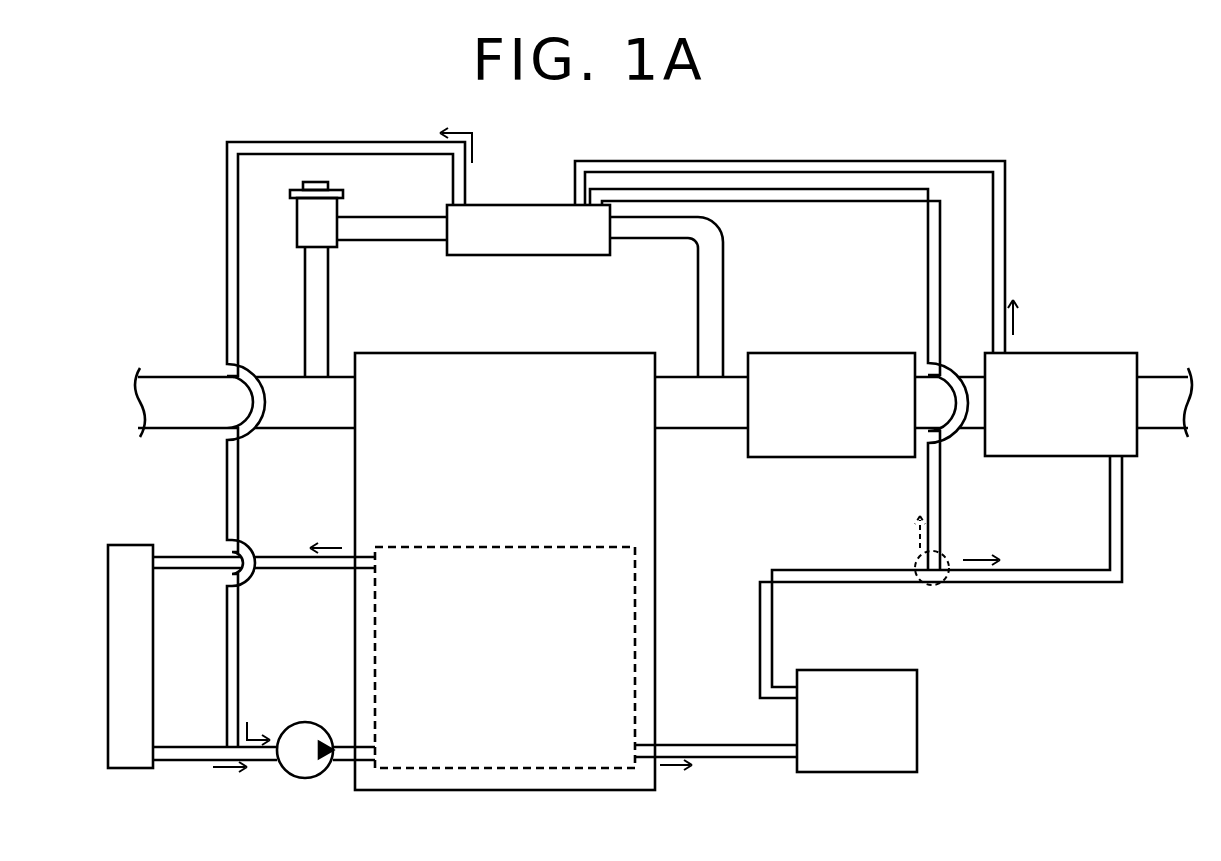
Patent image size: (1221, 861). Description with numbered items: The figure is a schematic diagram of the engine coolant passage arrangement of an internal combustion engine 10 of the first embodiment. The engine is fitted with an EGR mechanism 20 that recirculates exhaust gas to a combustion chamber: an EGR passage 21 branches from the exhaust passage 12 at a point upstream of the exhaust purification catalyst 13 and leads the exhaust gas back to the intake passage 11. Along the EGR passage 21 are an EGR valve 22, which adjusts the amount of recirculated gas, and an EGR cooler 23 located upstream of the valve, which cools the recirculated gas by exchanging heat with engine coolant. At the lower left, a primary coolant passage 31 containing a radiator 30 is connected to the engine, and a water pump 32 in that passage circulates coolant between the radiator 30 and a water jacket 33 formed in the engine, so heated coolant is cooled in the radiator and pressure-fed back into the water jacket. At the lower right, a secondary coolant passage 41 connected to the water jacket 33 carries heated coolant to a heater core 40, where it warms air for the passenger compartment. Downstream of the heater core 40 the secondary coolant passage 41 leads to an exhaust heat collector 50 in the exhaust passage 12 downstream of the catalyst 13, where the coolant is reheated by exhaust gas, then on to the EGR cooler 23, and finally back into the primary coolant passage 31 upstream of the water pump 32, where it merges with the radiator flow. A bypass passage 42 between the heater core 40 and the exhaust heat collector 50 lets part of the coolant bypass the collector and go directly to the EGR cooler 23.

The internal combustion engine 10 is at (606, 352).
The intake passage 11 is at (311, 428).
The exhaust passage 12 is at (710, 428).
The exhaust purification catalyst 13 is at (840, 352).
The EGR mechanism 20 is at (506, 263).
The EGR passage 21 is at (397, 240).
The EGR valve 22 is at (338, 256).
The EGR cooler 23 is at (522, 204).
The radiator 30 is at (108, 757).
The primary coolant passage 31 is at (264, 553).
The water pump 32 is at (300, 778).
The water jacket 33 is at (570, 547).
The heater core 40 is at (858, 773).
The secondary coolant passage 41 is at (388, 141).
The bypass passage 42 is at (941, 287).
The exhaust heat collector 50 is at (1070, 352).